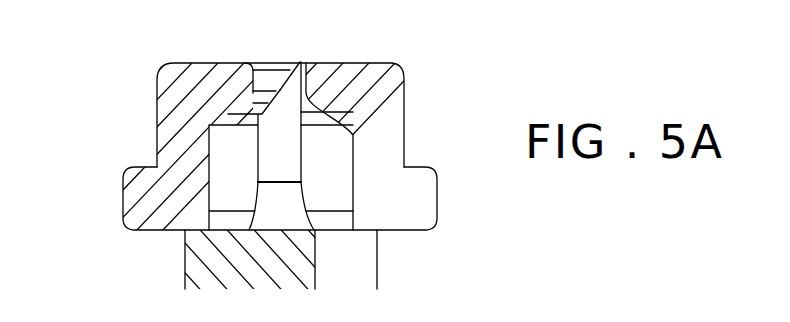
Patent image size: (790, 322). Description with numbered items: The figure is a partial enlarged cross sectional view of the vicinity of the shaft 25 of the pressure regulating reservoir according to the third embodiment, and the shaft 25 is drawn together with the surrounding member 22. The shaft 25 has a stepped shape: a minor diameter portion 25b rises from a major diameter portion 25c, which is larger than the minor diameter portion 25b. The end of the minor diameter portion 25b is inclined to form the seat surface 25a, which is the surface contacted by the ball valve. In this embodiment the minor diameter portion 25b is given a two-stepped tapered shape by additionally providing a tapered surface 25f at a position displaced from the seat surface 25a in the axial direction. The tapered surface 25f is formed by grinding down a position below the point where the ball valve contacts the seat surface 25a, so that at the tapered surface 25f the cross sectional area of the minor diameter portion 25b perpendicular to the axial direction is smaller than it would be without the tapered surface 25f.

The panel member 22 is at (172, 78).
The shaft 25 is at (254, 193).
The seat surface 25a is at (299, 62).
The minor diameter portion 25b is at (272, 156).
The major diameter portion 25c is at (194, 270).
The tapered surface 25f is at (253, 93).